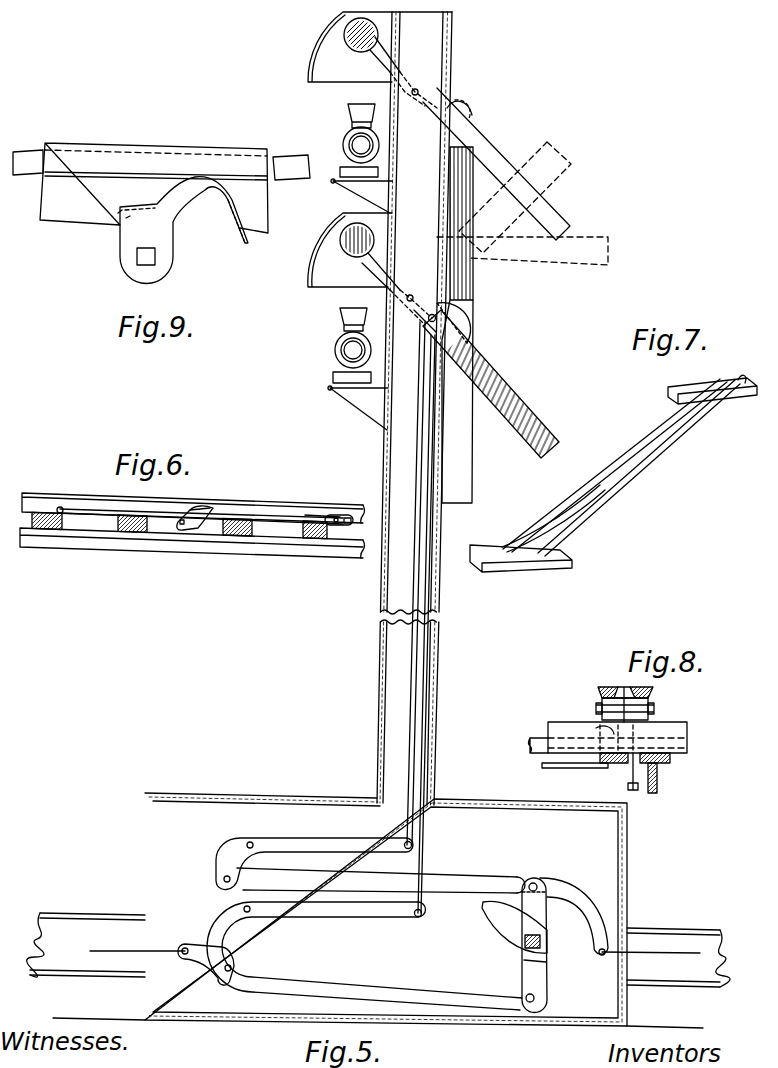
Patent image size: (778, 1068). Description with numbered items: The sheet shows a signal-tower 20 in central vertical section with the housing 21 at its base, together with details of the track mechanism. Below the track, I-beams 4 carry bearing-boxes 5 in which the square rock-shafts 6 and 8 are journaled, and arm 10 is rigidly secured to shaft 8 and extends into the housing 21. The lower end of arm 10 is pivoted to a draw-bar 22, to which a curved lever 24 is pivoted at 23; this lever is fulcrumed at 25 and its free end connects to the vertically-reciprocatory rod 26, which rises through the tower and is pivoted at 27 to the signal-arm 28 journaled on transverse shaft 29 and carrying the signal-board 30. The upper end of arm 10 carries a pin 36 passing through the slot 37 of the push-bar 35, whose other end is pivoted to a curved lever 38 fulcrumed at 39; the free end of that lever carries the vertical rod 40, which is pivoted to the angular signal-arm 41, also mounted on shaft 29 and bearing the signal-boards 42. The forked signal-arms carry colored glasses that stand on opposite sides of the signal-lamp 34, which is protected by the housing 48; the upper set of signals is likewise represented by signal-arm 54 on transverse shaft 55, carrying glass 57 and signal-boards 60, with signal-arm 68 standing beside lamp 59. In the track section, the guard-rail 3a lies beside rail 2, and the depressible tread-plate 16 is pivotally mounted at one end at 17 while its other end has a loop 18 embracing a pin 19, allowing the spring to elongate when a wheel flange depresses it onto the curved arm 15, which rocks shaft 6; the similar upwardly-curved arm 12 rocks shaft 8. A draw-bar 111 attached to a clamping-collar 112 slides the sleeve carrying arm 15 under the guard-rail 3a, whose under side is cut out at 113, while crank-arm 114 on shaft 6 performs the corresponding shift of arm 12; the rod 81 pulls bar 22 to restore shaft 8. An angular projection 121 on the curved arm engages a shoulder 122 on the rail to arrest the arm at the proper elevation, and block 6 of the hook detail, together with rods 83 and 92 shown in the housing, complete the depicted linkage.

In FIG. 7, the rail 2 is at (720, 404).
In FIG. 8, the rail 2 is at (652, 691).
In FIG. 6, the guard-rail 3a is at (326, 506).
In FIG. 7, the guard-rail 3a is at (666, 428).
In FIG. 8, the guard-rail 3a is at (598, 692).
In FIG. 8, the I-beam 4 is at (658, 783).
In FIG. 8, the bearing-box 5 is at (688, 739).
In FIG. 9, the rock-shaft 6 is at (155, 260).
In FIG. 5, the rock-shaft 8 is at (542, 942).
In FIG. 5, the arm 10 is at (524, 969).
In FIG. 5, the upwardly-curved arm 12 is at (494, 914).
In FIG. 6, the curved arm 15 is at (200, 507).
In FIG. 8, the curved arm 15 is at (601, 708).
In FIG. 9, the curved arm 15 is at (184, 230).
In FIG. 6, the tread-plate 16 is at (280, 503).
In FIG. 7, the tread-plate 16 is at (588, 502).
In FIG. 8, the tread-plate 16 is at (620, 688).
In FIG. 9, the tread-plate 16 is at (40, 153).
In FIG. 6, the pivot 17 is at (60, 506).
In FIG. 6, the loop 18 is at (352, 521).
In FIG. 6, the pin 19 is at (346, 515).
In FIG. 5, the signal-tower 20 is at (438, 605).
In FIG. 8, the housing 21 is at (537, 767).
In FIG. 5, the draw-bar 22 is at (410, 988).
In FIG. 5, the pivot 23 is at (234, 968).
In FIG. 5, the curved lever 24 is at (222, 931).
In FIG. 5, the fulcrum 25 is at (250, 913).
In FIG. 5, the vertically-reciprocatory rod 26 is at (414, 846).
In FIG. 5, the pivot 27 is at (420, 328).
In FIG. 5, the signal-arm 28 is at (462, 343).
In FIG. 5, the transverse shaft 29 is at (402, 293).
In FIG. 5, the signal-board 30 is at (547, 428).
In FIG. 5, the signal-lamp 34 is at (336, 353).
In FIG. 5, the push-bar 35 is at (488, 876).
In FIG. 5, the pin 36 is at (542, 878).
In FIG. 5, the slot 37 is at (531, 882).
In FIG. 5, the curved lever 38 is at (300, 840).
In FIG. 5, the fulcrum 39 is at (249, 842).
In FIG. 5, the vertical rod 40 is at (406, 744).
In FIG. 5, the angular signal-arm 41 is at (446, 318).
In FIG. 5, the signal-board 42 is at (473, 490).
In FIG. 5, the housing 48 is at (308, 272).
In FIG. 5, the signal-arm 54 is at (468, 150).
In FIG. 5, the transverse shaft 55 is at (417, 88).
In FIG. 5, the glass 57 is at (344, 32).
In FIG. 5, the lamp 59 is at (344, 138).
In FIG. 5, the signal-board 60 is at (540, 224).
In FIG. 5, the signal-arm 68 is at (464, 118).
In FIG. 5, the rod 81 is at (673, 955).
In FIG. 5, the rod 83 is at (94, 950).
In FIG. 5, the wheel 92 is at (341, 240).
In FIG. 8, the draw-bar 111 is at (580, 769).
In FIG. 8, the clamping-collar 112 is at (593, 731).
In FIG. 6, the cut-out 113 is at (210, 510).
In FIG. 9, the cut-out 113 is at (233, 208).
In FIG. 8, the crank-arm 114 is at (636, 791).
In FIG. 9, the angular projection 121 is at (128, 219).
In FIG. 9, the shoulder 122 is at (118, 214).